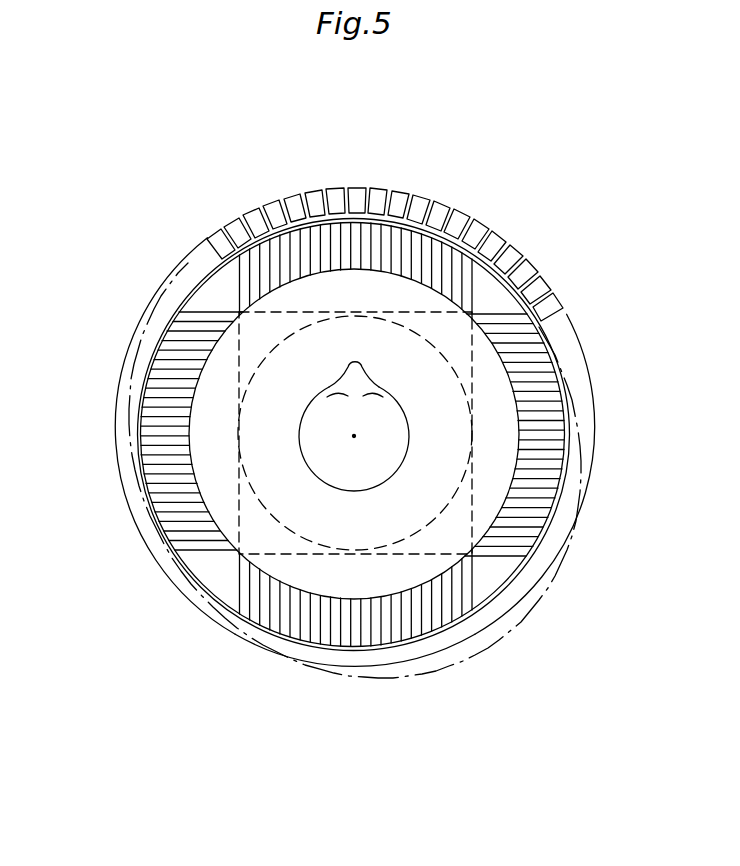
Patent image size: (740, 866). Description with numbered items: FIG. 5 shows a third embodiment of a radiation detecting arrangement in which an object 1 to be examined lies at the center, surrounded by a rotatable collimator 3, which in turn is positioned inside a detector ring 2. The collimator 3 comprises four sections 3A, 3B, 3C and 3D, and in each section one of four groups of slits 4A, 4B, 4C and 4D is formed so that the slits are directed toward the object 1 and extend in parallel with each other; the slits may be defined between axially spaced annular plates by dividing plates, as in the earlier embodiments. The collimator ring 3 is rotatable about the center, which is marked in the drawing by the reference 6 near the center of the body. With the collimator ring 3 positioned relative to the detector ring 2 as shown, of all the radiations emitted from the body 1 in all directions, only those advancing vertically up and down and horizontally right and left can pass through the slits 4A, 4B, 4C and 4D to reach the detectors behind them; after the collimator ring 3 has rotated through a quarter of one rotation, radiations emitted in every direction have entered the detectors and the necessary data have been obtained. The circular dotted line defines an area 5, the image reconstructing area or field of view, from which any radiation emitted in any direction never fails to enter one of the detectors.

The object 1 is at (396, 398).
The detector ring 2 is at (579, 321).
The collimator 3 is at (486, 574).
The section 3A is at (416, 220).
The section 3B is at (569, 428).
The section 3C is at (352, 653).
The section 3D is at (139, 456).
The group of slits 4A is at (372, 268).
The group of slits 4B is at (513, 458).
The group of slits 4C is at (369, 603).
The group of slits 4D is at (192, 443).
The area 5 is at (393, 355).
The center of wafer 6 is at (354, 437).